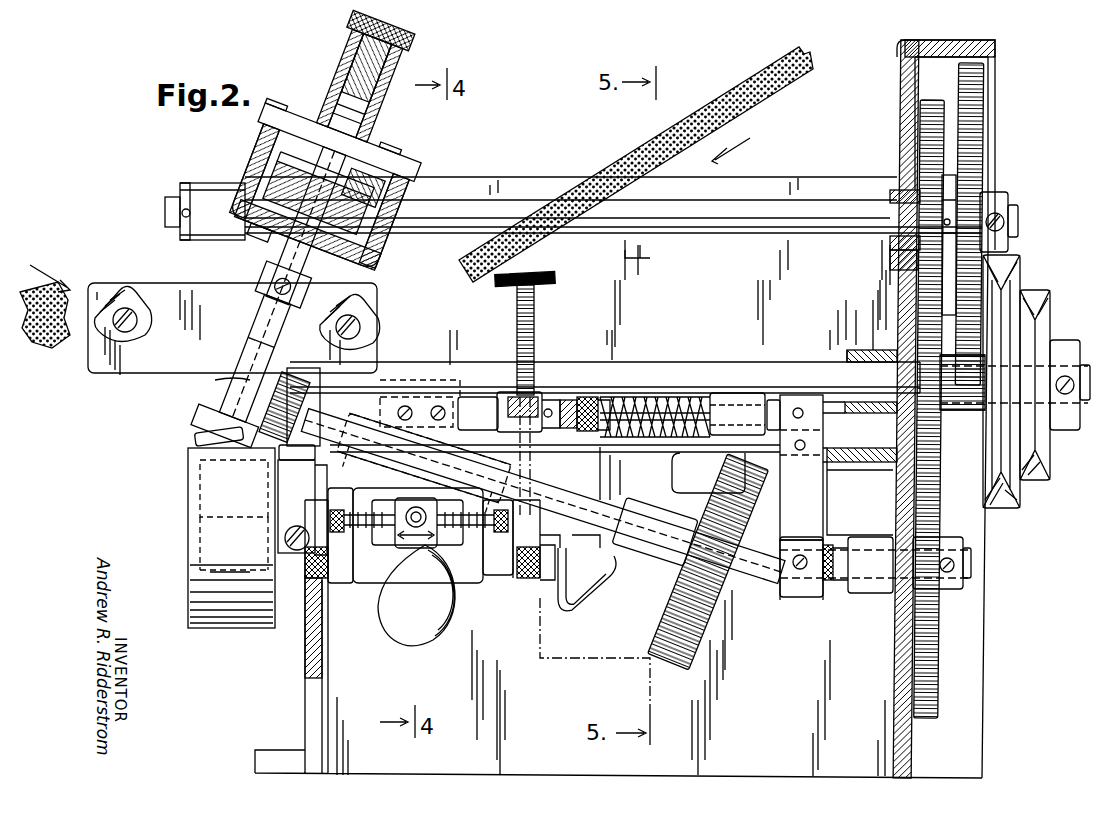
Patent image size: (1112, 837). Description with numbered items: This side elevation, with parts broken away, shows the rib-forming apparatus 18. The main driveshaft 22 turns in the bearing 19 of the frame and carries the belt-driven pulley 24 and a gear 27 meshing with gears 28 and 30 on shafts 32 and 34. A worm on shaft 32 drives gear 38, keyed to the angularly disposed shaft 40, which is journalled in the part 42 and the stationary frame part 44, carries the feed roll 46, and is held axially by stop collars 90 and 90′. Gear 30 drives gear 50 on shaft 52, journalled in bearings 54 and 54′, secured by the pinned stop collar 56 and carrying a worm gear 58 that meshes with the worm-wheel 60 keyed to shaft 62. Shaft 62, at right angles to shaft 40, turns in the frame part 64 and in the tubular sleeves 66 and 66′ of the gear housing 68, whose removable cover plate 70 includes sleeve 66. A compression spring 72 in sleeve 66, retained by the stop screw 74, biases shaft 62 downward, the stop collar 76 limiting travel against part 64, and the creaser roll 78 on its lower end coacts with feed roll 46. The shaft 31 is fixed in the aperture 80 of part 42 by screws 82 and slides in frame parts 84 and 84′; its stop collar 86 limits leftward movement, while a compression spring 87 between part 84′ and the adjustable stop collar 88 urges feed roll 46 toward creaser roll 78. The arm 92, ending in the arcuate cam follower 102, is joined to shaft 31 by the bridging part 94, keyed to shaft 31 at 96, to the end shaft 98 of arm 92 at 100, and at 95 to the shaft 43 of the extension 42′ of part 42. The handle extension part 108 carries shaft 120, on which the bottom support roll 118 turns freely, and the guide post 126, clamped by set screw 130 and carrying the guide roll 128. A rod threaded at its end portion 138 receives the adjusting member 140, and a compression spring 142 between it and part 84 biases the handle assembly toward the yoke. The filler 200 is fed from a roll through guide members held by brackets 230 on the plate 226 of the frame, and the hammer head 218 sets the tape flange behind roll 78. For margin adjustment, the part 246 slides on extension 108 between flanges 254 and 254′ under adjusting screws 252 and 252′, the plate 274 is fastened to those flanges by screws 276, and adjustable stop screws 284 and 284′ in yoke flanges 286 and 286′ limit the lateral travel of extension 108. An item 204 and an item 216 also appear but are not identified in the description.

The apparatus 18 is at (200, 650).
The bearing 19 is at (855, 350).
The main driveshaft 22 is at (690, 365).
The pulley 24 is at (1050, 326).
The gear 27 is at (972, 418).
The gear 28 is at (935, 508).
The gear 30 is at (975, 150).
The shaft 31 is at (475, 397).
The shaft 32 is at (968, 570).
The shaft 34 is at (1018, 215).
The gear 38 is at (712, 638).
The angularly disposed shaft 40 is at (325, 395).
The part 42 is at (376, 400).
The extension 42′ is at (672, 473).
The shaft 43 is at (768, 450).
The part 44 is at (678, 520).
The feed roll 46 is at (300, 375).
The gear 50 is at (912, 278).
The shaft 52 is at (790, 230).
The bearing 54 is at (890, 195).
The bearing 54′ is at (213, 190).
The stop collar 56 is at (188, 190).
The worm gear 58 is at (370, 188).
The worm-wheel 60 is at (305, 198).
The shaft 62 is at (305, 164).
The frame part 64 is at (248, 330).
The tubular sleeve 66 is at (372, 130).
The tubular sleeve 66′ is at (262, 262).
The gear housing 68 is at (247, 134).
The removable cover plate 70 is at (305, 125).
The compression spring 72 is at (402, 66).
The stop screw 74 is at (348, 56).
The stop collar 76 is at (268, 290).
The creaser roll 78 is at (222, 424).
The aperture 80 is at (420, 380).
The screws 82 is at (428, 397).
The frame part 84 is at (508, 395).
The frame part 84′ is at (745, 380).
The stop collar 86 is at (570, 397).
The compression spring 87 is at (640, 400).
The adjustable stop collar 88 is at (600, 400).
The stop collar 90 is at (424, 458).
The stop collar 90′ is at (455, 437).
The arm 92 is at (612, 580).
The bridging part 94 is at (812, 516).
The key 95 is at (806, 448).
The key 96 is at (799, 409).
The end shaft 98 is at (840, 585).
The key 100 is at (795, 572).
The cam follower 102 is at (578, 598).
The extension part 108 is at (388, 588).
The bottom support roll 118 is at (190, 582).
The shaft 120 is at (215, 525).
The guide post 126 is at (292, 485).
The guide roll 128 is at (290, 462).
The set screw 130 is at (284, 540).
The threaded end portion 138 is at (545, 276).
The threaded adjusting member 140 is at (555, 278).
The compression spring 142 is at (535, 320).
The filler 200 is at (760, 72).
The cut-off piece 204 is at (48, 345).
The edge 216 is at (214, 382).
The head 218 is at (194, 436).
The plate 226 is at (172, 300).
The brackets 230 is at (120, 294).
The part 246 is at (400, 575).
The adjusting screw 252 is at (345, 500).
The adjusting screw 252′ is at (495, 485).
The flange 254 is at (395, 555).
The flange 254′ is at (475, 545).
The plate 274 is at (405, 506).
The screws 276 is at (417, 474).
The adjustable stop screw 284 is at (305, 580).
The adjustable stop screw 284′ is at (525, 585).
The flange 286 is at (348, 580).
The flange 286′ is at (505, 590).